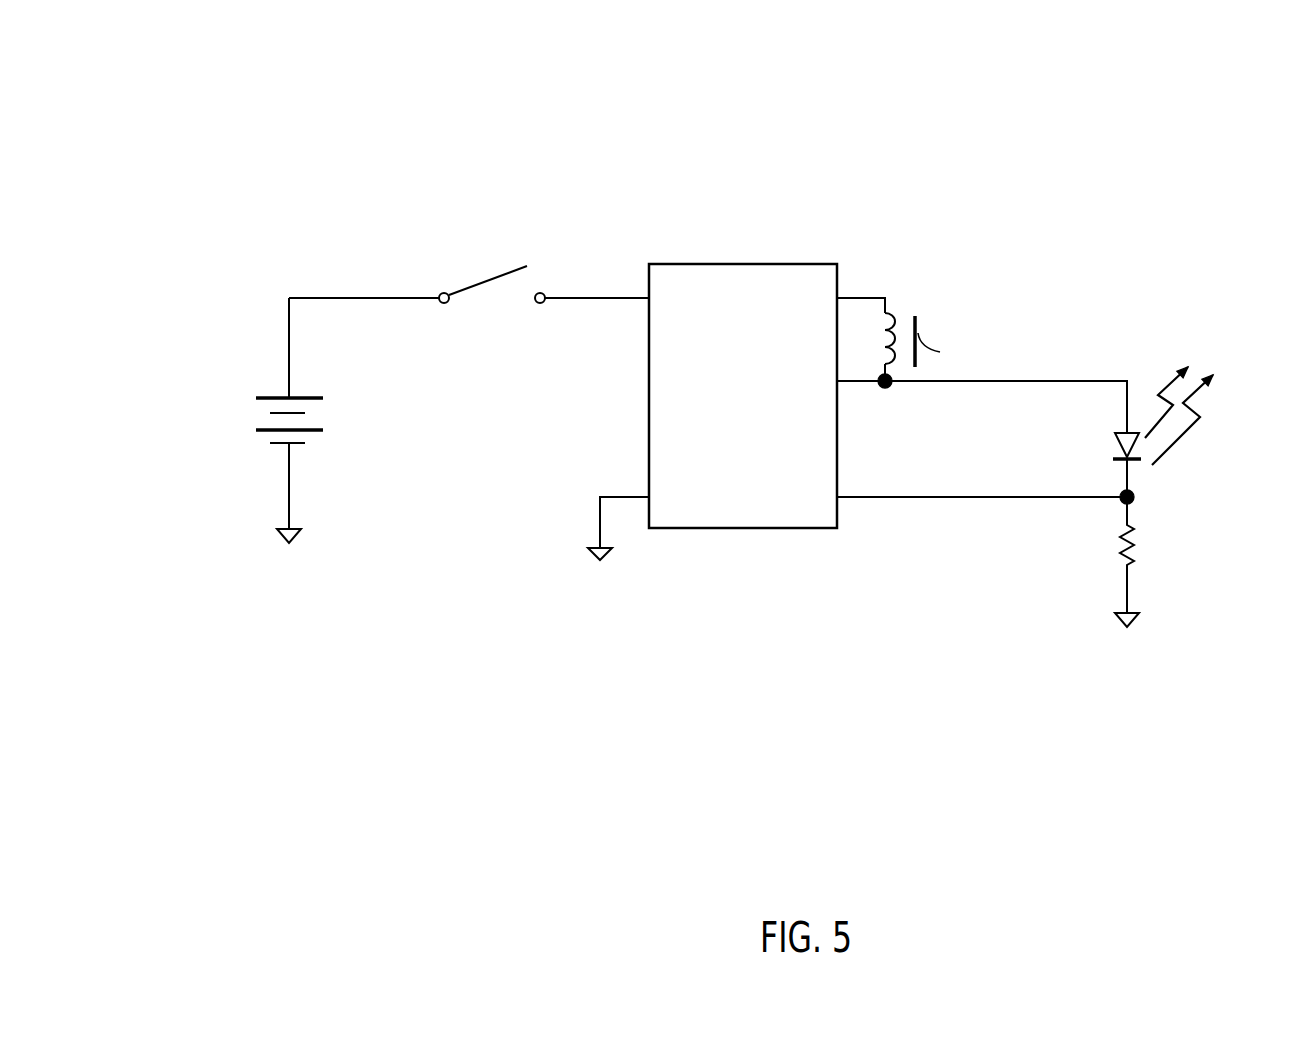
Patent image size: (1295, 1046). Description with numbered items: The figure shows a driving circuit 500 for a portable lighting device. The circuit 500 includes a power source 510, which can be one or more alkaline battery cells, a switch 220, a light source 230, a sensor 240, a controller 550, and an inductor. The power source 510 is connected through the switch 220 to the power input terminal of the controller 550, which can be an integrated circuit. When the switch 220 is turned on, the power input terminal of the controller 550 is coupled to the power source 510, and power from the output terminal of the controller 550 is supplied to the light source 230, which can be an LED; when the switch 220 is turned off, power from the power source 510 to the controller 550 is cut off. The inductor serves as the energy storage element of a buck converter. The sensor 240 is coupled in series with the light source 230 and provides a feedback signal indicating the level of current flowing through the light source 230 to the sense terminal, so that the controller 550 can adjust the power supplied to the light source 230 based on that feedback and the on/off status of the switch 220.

The driving circuit 500 is at (290, 135).
The power source 510 is at (262, 387).
The switch 220 is at (493, 276).
The controller 550 is at (773, 531).
The light source 230 is at (1122, 432).
The sensor 240 is at (1130, 562).